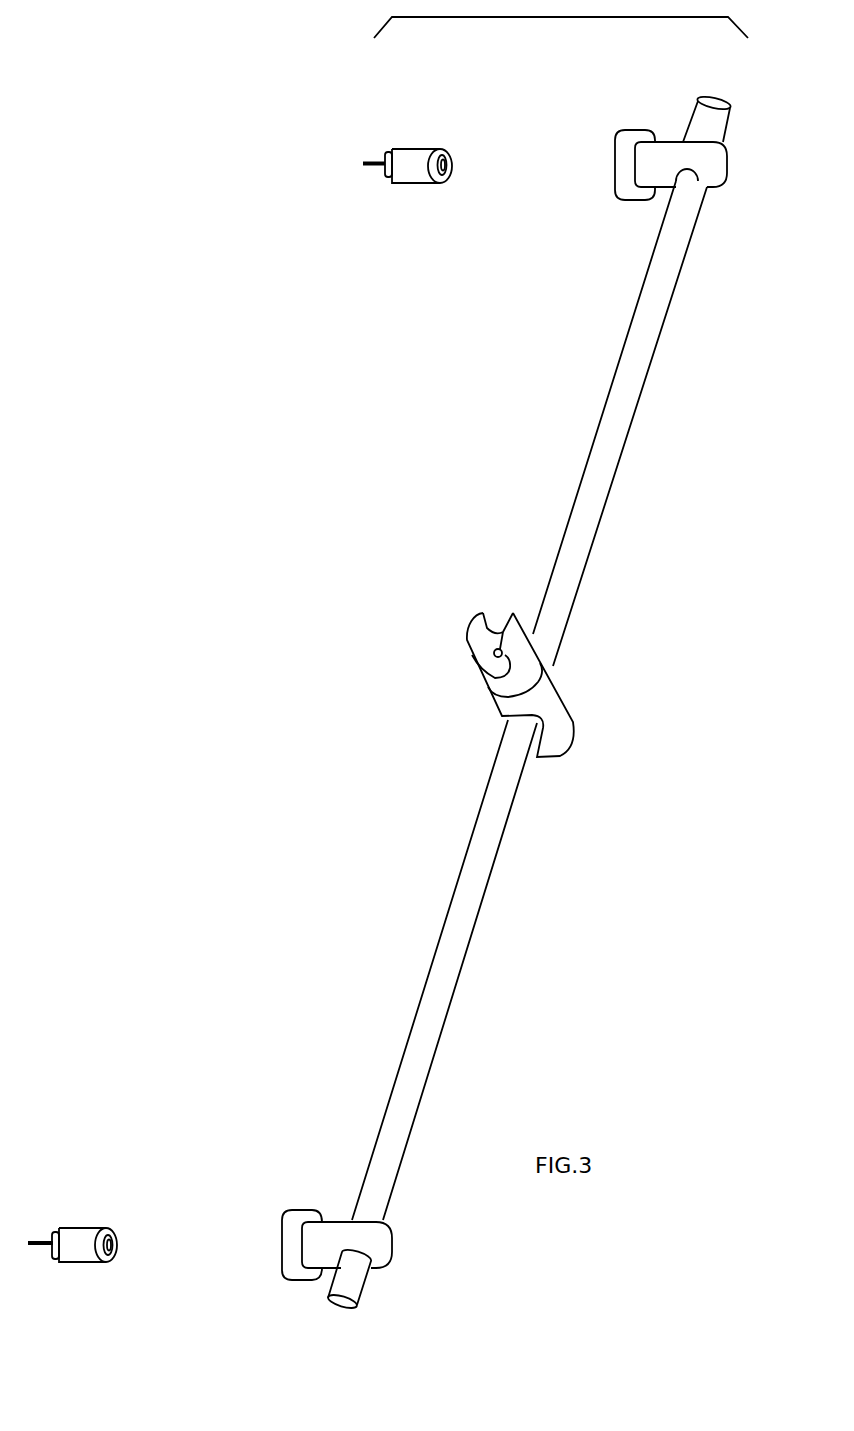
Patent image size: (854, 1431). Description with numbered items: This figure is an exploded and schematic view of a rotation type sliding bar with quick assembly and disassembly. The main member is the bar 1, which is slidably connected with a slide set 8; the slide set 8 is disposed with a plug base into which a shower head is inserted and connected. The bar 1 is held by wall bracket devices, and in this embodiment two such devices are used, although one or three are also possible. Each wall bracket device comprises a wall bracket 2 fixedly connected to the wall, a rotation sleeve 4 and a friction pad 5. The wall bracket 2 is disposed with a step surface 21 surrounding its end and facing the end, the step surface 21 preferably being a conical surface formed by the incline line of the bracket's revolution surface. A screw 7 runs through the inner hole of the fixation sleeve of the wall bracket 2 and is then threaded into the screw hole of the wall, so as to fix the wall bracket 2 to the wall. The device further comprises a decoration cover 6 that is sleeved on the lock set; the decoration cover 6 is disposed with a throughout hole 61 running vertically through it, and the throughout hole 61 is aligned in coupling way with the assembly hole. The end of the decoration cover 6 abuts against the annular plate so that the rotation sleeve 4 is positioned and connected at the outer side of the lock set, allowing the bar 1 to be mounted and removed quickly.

The bar 1 is at (438, 967).
The wall bracket 2 is at (388, 140).
The rotation sleeve 4 is at (623, 133).
The friction pad 5 is at (443, 163).
The decoration cover 6 is at (672, 148).
The screw 7 is at (368, 158).
The slide set 8 is at (460, 643).
The step surface 21 is at (388, 175).
The throughout hole 61 is at (697, 190).